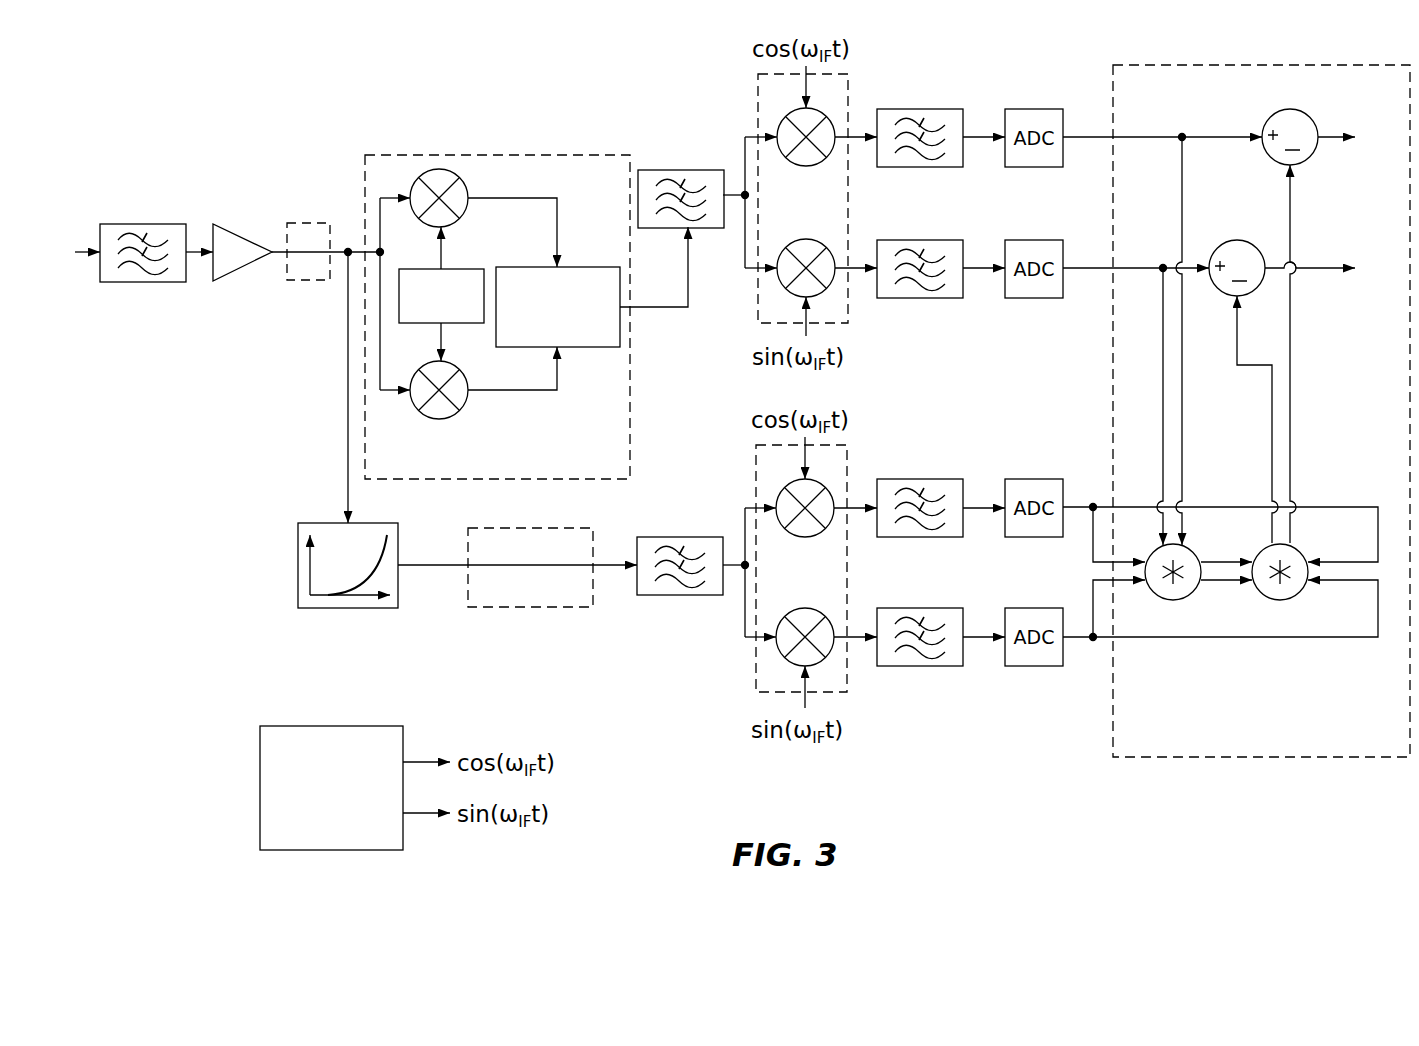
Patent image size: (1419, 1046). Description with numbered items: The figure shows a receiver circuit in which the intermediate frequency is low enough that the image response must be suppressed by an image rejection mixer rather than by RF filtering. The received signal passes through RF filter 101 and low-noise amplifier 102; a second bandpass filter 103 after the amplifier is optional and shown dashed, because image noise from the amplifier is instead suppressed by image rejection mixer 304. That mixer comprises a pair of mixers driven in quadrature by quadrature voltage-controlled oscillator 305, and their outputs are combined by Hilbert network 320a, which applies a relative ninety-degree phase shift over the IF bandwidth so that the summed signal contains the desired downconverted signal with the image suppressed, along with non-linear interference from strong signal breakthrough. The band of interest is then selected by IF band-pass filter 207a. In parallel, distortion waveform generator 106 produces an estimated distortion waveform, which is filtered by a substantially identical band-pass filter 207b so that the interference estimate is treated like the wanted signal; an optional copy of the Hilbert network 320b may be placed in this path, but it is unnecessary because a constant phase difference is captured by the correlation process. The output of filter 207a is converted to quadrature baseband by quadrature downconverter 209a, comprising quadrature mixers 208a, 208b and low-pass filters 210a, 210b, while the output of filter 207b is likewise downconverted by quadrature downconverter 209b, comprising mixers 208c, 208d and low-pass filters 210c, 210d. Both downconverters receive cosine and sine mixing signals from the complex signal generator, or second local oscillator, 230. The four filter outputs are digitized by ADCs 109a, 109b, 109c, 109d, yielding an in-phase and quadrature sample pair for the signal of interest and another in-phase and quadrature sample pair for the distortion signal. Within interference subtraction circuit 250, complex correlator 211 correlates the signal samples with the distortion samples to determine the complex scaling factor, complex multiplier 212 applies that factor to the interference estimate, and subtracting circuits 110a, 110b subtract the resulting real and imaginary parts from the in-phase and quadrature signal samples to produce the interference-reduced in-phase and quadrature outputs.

The RF filter 101 is at (157, 224).
The low-noise amplifier 102 is at (232, 230).
The second bandpass filter 103 is at (317, 281).
The image rejection mixer 304 is at (497, 317).
The quadrature voltage-controlled oscillator 305 is at (425, 317).
The Hilbert network 320a is at (537, 336).
The IF band-pass filter 207a is at (660, 169).
The band-pass filter 207b is at (660, 537).
The quadrature downconverter 209a is at (836, 197).
The quadrature downconverter 209b is at (835, 567).
The quadrature mixer 208a is at (822, 110).
The quadrature mixer 208b is at (822, 241).
The mixer 208c is at (821, 481).
The mixer 208d is at (821, 610).
The low-pass filter 210a is at (935, 109).
The low-pass filter 210b is at (935, 240).
The low-pass filter 210c is at (935, 479).
The low-pass filter 210d is at (935, 608).
The ADC 109a is at (1022, 109).
The ADC 109b is at (1022, 240).
The ADC 109c is at (1022, 479).
The ADC 109d is at (1022, 608).
The subtracting circuit 110a is at (1310, 112).
The subtracting circuit 110b is at (1255, 244).
The distortion waveform generator 106 is at (347, 613).
The Hilbert network 320b is at (537, 607).
The complex correlator 211 is at (1192, 549).
The complex multiplier 212 is at (1299, 549).
The interference subtraction circuit 250 is at (1236, 411).
The complex signal generator (second local oscillator) 230 is at (316, 813).